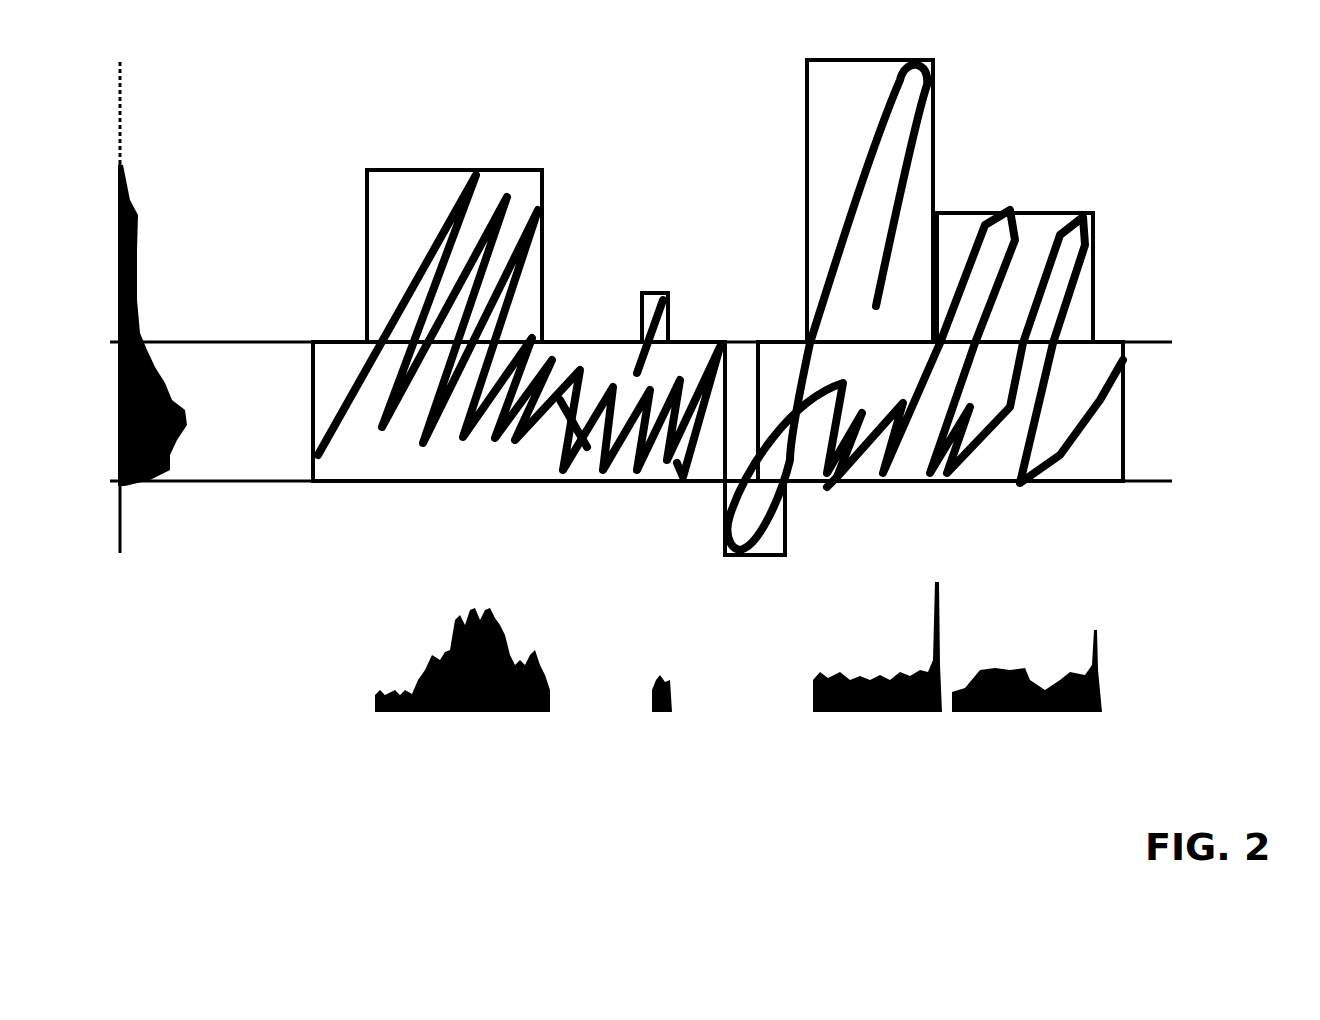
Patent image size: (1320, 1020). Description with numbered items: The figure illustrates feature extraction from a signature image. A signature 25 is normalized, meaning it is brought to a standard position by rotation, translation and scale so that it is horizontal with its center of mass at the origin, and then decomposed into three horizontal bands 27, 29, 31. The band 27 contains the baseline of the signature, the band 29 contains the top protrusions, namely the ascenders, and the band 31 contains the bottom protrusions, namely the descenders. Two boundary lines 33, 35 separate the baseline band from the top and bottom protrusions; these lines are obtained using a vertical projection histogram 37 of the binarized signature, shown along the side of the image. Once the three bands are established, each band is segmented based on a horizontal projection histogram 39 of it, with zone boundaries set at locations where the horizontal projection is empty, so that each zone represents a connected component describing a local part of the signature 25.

The signature 25 is at (1100, 116).
The horizontal band 27 is at (1176, 403).
The horizontal band 29 is at (1177, 270).
The horizontal band 31 is at (1009, 523).
The boundary line 33 is at (1165, 343).
The boundary line 35 is at (1153, 482).
The vertical projection histogram 37 is at (178, 127).
The horizontal projection histogram 39 is at (1129, 688).